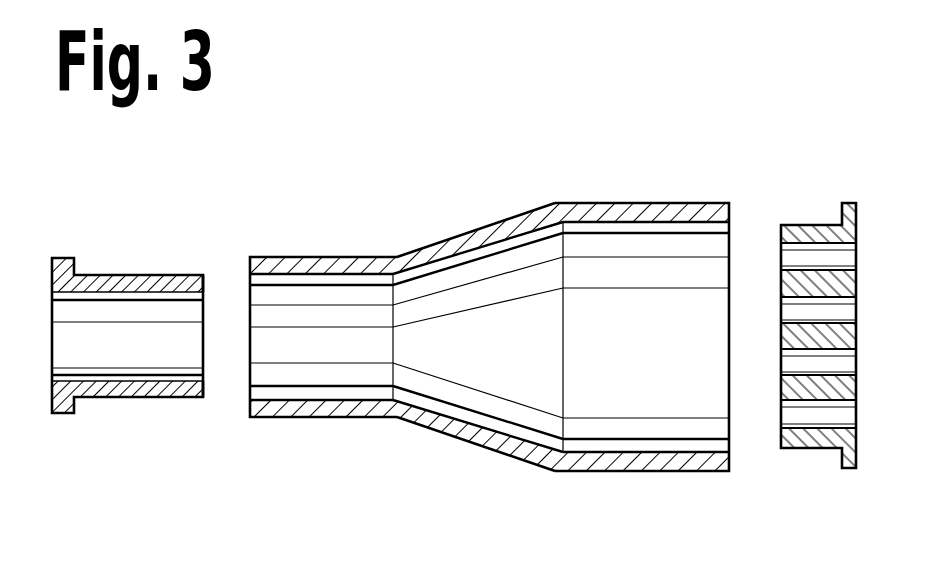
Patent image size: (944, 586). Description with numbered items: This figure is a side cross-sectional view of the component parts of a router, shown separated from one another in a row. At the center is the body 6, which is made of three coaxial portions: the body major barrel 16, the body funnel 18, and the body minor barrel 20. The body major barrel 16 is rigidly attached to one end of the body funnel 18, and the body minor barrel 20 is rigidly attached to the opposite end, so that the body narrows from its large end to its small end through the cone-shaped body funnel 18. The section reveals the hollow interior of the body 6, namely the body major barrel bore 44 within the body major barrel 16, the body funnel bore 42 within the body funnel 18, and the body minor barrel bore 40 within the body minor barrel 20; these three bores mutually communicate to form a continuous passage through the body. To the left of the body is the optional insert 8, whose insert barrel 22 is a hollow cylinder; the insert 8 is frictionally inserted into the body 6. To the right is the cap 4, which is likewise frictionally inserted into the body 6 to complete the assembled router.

The cap 4 is at (778, 152).
The body 6 is at (489, 325).
The insert 8 is at (127, 330).
The body major barrel 16 is at (610, 472).
The body funnel 18 is at (475, 452).
The body minor barrel 20 is at (292, 417).
The insert barrel 22 is at (132, 397).
The body minor barrel bore 40 is at (342, 348).
The body funnel bore 42 is at (520, 370).
The body major barrel bore 44 is at (651, 385).